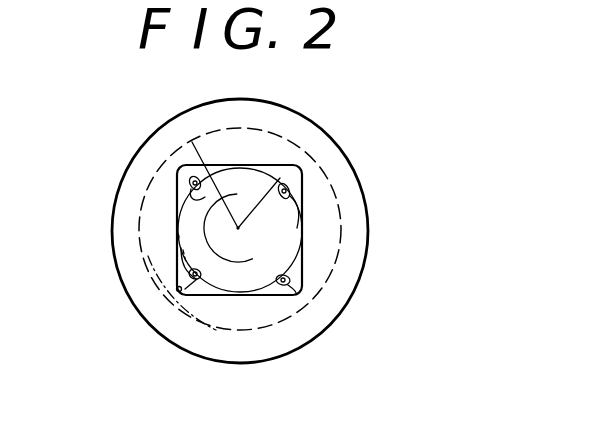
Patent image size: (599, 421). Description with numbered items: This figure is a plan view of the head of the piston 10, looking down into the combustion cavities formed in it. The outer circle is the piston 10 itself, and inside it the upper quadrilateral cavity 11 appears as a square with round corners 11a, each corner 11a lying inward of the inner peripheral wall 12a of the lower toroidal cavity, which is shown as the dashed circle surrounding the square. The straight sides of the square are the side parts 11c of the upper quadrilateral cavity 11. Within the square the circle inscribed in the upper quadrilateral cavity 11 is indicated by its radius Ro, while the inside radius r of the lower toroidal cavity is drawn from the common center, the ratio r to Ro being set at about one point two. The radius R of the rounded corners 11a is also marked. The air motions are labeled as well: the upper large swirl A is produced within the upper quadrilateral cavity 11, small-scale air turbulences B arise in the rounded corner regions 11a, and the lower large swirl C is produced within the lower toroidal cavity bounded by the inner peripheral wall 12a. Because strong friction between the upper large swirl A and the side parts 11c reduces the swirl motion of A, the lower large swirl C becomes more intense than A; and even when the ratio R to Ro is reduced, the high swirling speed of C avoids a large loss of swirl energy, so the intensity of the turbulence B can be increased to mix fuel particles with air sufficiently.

The piston 10 is at (356, 208).
The inner peripheral wall 12a is at (280, 141).
The upper quadrilateral cavity 11 is at (268, 296).
The round corners 11a is at (178, 290).
The side parts 11c is at (177, 236).
The radius of the inscribed circle Ro is at (262, 186).
The inside radius of the lower toroidal cavity r is at (217, 195).
The upper large swirl A is at (217, 233).
The radius of the rounded corners R is at (298, 173).
The air turbulences B is at (288, 278).
The lower large swirl C is at (219, 331).